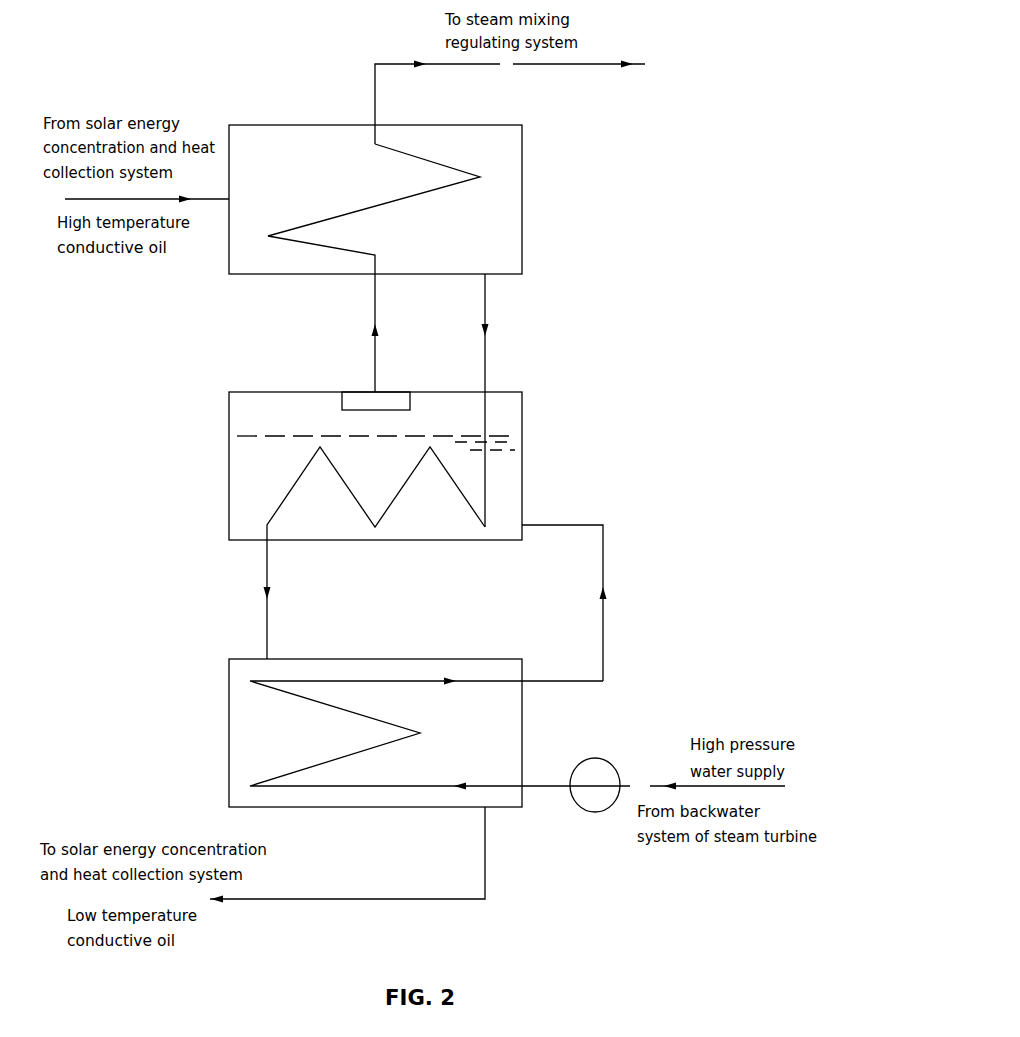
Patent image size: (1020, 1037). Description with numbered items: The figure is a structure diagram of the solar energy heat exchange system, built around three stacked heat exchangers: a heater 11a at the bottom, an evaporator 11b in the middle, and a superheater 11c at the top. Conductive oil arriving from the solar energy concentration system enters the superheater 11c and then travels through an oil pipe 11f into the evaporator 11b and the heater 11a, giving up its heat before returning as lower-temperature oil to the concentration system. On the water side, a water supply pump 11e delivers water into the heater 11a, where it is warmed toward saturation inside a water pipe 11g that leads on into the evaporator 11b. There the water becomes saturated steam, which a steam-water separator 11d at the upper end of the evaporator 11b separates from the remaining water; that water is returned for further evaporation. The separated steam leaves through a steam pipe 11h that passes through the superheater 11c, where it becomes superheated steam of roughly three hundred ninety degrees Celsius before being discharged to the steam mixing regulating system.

The heater 11a is at (503, 719).
The evaporator 11b is at (512, 414).
The superheater 11c is at (512, 147).
The steam-water separator 11d is at (350, 401).
The water supply pump 11e is at (592, 805).
The oil pipe 11f is at (485, 362).
The water pipe 11g is at (603, 622).
The steam pipe 11h is at (375, 299).